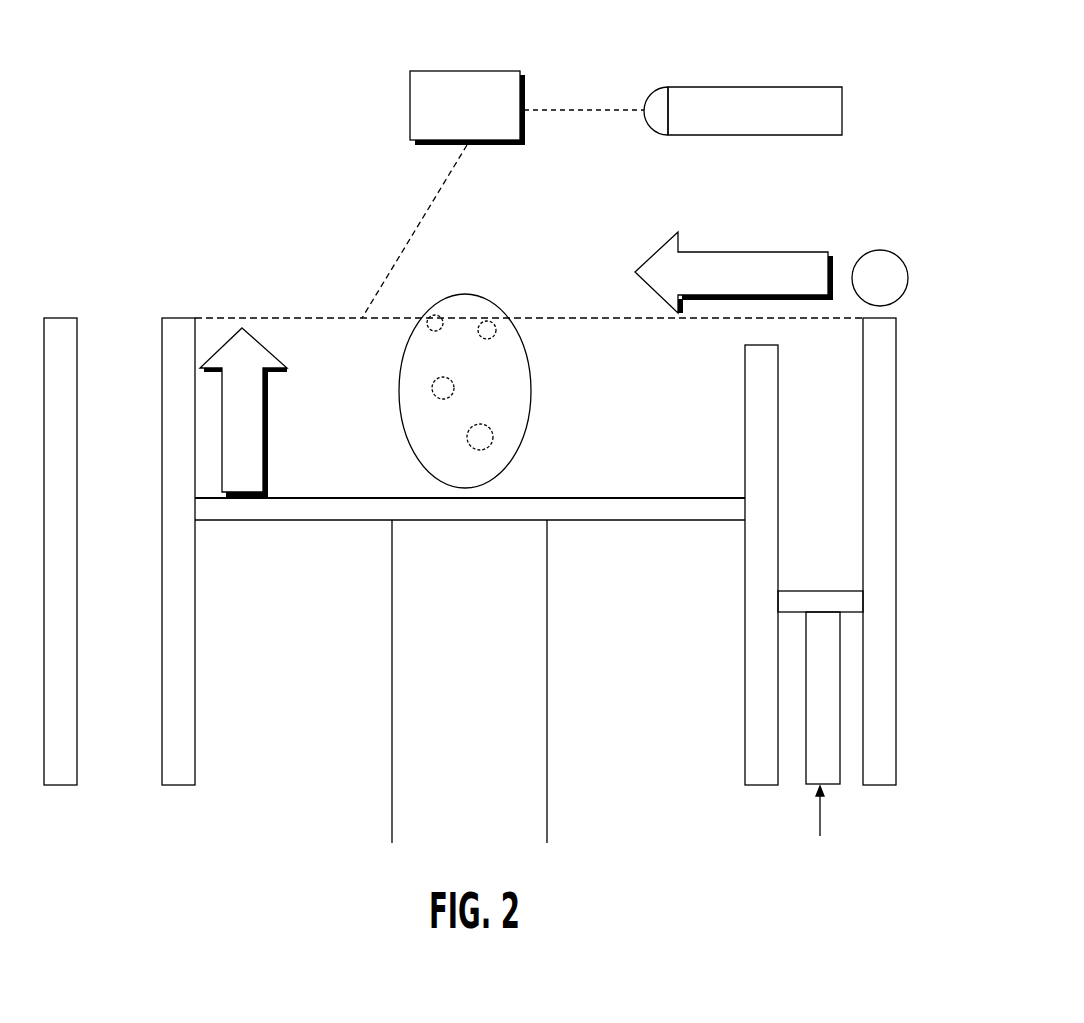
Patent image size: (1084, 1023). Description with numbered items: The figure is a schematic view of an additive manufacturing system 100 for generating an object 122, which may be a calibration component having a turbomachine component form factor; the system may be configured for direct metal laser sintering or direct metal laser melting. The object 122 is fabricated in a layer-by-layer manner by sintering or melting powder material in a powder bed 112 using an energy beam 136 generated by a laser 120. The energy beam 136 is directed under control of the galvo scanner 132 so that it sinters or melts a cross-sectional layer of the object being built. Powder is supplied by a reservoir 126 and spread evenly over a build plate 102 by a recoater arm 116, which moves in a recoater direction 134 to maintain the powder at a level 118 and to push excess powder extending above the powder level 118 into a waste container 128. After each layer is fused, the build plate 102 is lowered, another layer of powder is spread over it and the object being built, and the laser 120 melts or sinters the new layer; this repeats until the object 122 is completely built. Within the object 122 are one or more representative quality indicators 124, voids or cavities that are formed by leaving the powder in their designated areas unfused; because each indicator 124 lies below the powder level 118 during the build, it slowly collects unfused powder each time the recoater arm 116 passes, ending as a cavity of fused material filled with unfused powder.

The additive manufacturing system 100 is at (167, 118).
The build plate 102 is at (695, 497).
The powder bed 112 is at (602, 360).
The recoater arm 116 is at (877, 250).
The powder level 118 is at (270, 317).
The laser 120 is at (695, 85).
The object 122 is at (400, 383).
The representative quality indicators 124 is at (435, 322).
The reservoir 126 is at (843, 430).
The waste container 128 is at (140, 663).
The galvo scanner 132 is at (498, 71).
The recoater direction 134 is at (660, 246).
The energy beam 136 is at (418, 218).